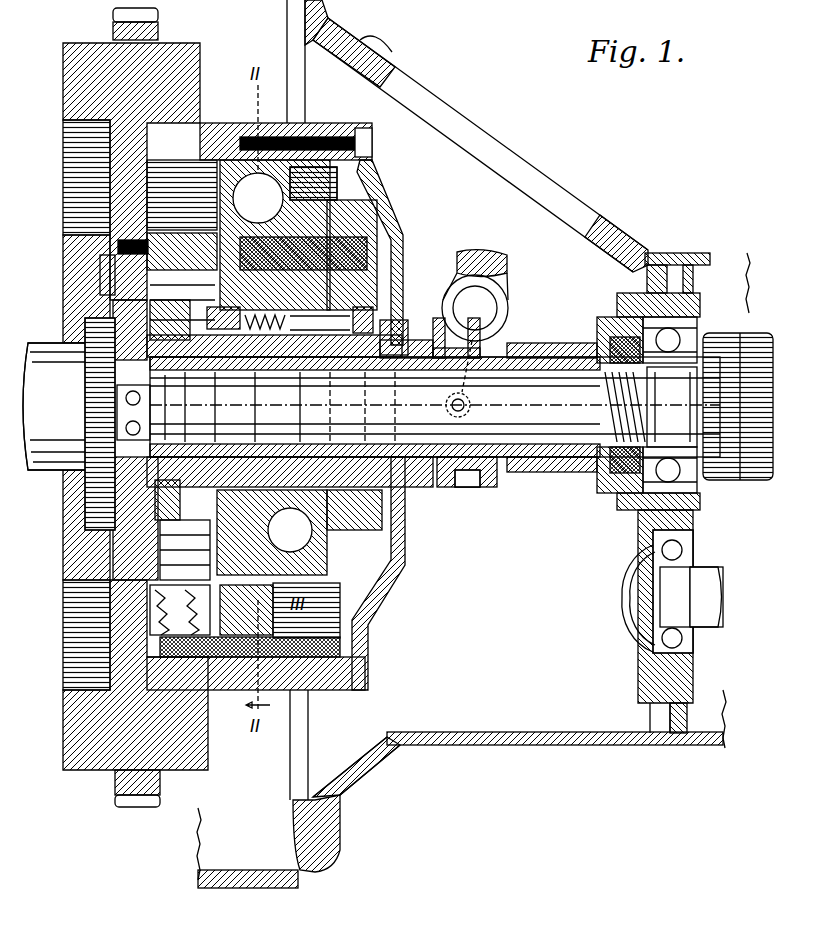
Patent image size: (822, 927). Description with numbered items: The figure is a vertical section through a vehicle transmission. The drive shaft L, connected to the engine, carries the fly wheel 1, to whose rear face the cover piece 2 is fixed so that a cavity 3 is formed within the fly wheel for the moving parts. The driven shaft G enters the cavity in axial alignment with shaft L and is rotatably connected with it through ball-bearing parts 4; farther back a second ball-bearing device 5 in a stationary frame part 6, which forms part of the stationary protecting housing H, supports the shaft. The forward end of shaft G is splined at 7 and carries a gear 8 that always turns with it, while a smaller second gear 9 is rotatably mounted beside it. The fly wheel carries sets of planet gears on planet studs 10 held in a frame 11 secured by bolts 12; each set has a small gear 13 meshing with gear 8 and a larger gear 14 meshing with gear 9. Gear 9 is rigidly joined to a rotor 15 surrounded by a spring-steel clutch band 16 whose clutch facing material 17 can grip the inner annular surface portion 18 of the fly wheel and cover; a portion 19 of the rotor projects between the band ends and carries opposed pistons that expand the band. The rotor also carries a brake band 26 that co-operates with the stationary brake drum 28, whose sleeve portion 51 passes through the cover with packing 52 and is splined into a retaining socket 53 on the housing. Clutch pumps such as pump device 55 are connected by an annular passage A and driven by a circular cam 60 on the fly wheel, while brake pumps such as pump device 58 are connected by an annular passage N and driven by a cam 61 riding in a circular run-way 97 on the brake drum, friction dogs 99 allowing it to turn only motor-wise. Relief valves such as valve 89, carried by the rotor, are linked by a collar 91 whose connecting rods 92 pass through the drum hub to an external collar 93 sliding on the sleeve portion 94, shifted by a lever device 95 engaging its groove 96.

The fly wheel 1 is at (83, 720).
The cover piece 2 is at (360, 197).
The cavity 3 is at (369, 601).
The ball-bearing parts 4 is at (110, 418).
The second ball-bearing device 5 is at (693, 305).
The stationary frame part 6 is at (694, 520).
The splined end 7 is at (82, 470).
The gear 8 is at (92, 505).
The second gear 9 is at (96, 336).
The planet studs 10 is at (110, 561).
The frame 11 is at (160, 226).
The bolts 12 is at (128, 247).
The small planet gear 13 is at (100, 531).
The larger planet gear 14 is at (150, 632).
The rotor 15 is at (100, 265).
The clutch band 16 is at (205, 146).
The clutch facing material 17 is at (318, 180).
The inner annular surface portion 18 is at (190, 187).
The rotor portion 19 is at (228, 178).
The brake band 26 is at (390, 230).
The brake drum 28 is at (397, 573).
The sleeve portion 51 is at (456, 482).
The packing 52 is at (440, 316).
The retaining socket 53 is at (594, 462).
The pump device 55 is at (116, 582).
The pump device 58 is at (385, 246).
The circular cam 60 is at (185, 330).
The circular cam 61 is at (406, 515).
The manually operated relief valve 89 is at (298, 378).
The collar 91 is at (378, 390).
The connecting rods 92 is at (483, 318).
The external collar 93 is at (481, 472).
The sleeve portion 94 is at (480, 370).
The lever device 95 is at (492, 262).
The groove 96 is at (462, 484).
The circular run-way 97 is at (392, 318).
The friction dogs 99 is at (396, 532).
The annular passage A is at (366, 256).
The annular passage N is at (377, 272).
The protecting housing H is at (606, 205).
The drive shaft L is at (34, 346).
The driven shaft G is at (561, 466).